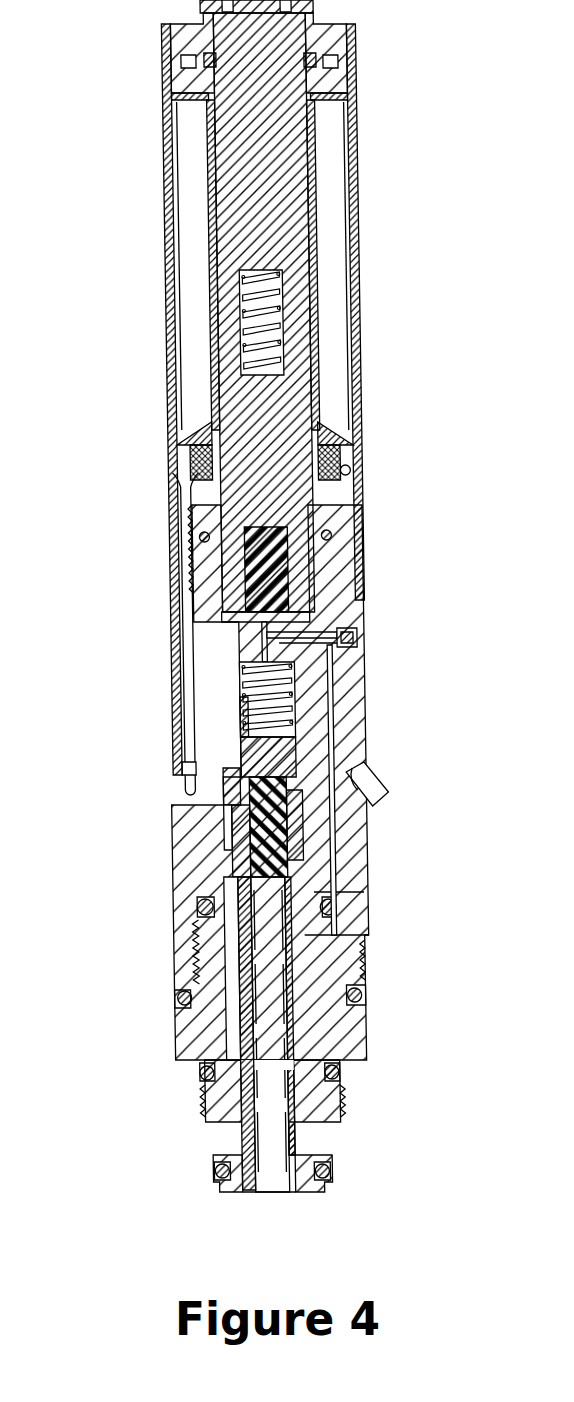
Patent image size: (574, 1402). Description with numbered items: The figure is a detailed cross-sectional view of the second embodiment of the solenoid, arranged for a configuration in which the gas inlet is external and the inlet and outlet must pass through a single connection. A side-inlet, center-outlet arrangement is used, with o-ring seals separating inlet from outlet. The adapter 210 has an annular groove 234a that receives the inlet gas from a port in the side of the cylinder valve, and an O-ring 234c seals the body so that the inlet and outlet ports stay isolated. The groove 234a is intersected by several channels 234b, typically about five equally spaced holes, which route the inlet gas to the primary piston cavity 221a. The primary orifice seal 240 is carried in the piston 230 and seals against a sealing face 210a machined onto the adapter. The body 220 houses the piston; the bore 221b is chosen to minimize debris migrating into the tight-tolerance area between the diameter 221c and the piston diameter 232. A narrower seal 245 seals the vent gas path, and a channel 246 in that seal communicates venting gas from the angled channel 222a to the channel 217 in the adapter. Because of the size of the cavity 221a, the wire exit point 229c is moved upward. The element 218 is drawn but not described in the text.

The adapter 210 is at (199, 1210).
The sealing face 210a is at (248, 945).
The channel 217 is at (367, 935).
The lower flange seal 218 is at (368, 963).
The body 220 is at (370, 662).
The primary piston cavity 221a is at (238, 848).
The bore 221b is at (270, 745).
The diameter 221c is at (175, 660).
The channel 222a is at (368, 835).
The wire exit point 229c is at (388, 772).
The piston 230 is at (262, 700).
The diameter 232 is at (238, 795).
The annular groove 234a is at (208, 1140).
The channels 234b is at (236, 988).
The O-ring 234c is at (213, 1170).
The seal 240 is at (297, 860).
The seal 245 is at (200, 905).
The channel 246 is at (363, 907).